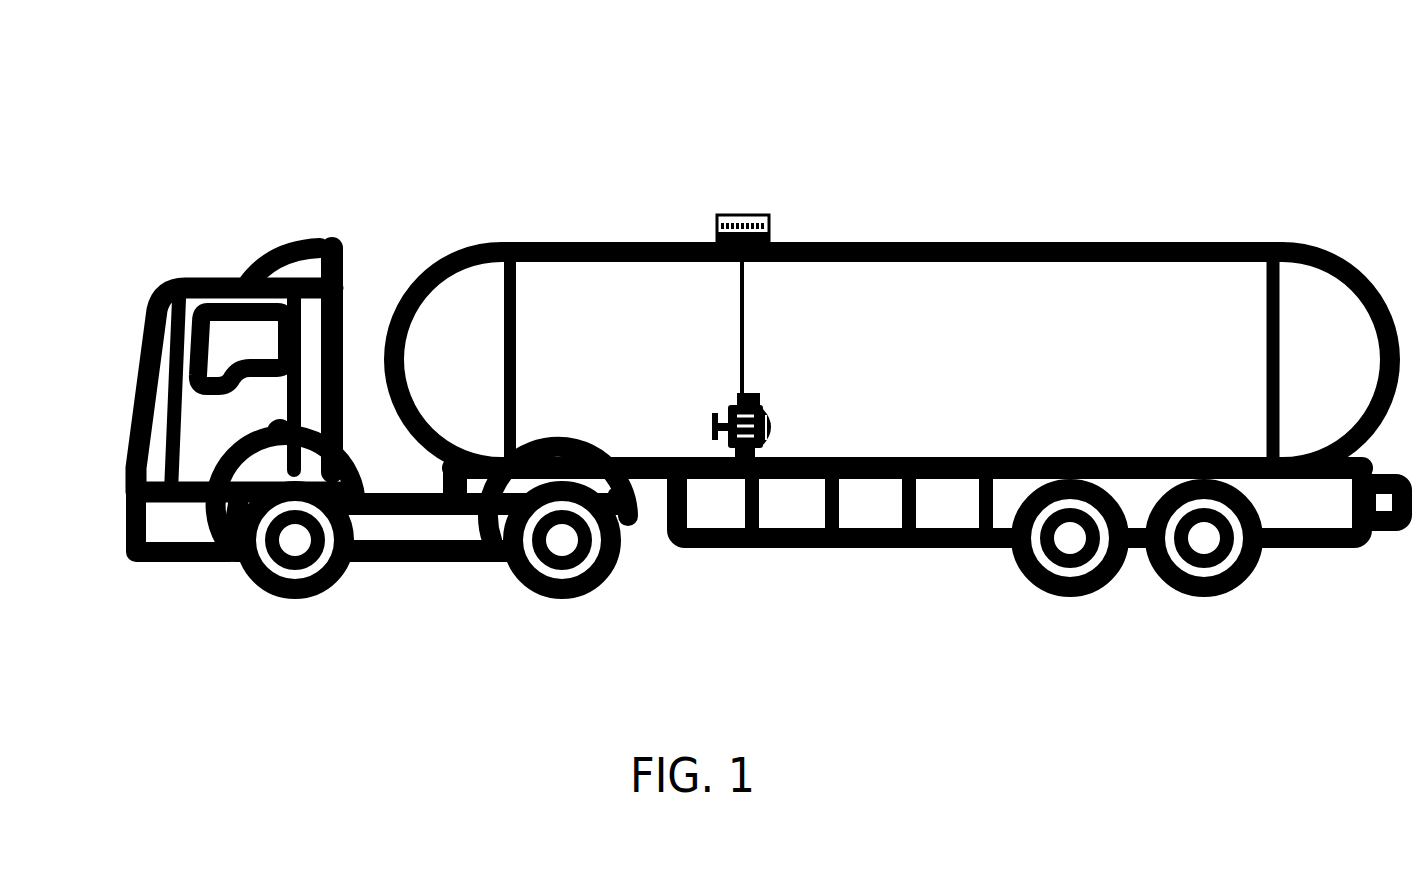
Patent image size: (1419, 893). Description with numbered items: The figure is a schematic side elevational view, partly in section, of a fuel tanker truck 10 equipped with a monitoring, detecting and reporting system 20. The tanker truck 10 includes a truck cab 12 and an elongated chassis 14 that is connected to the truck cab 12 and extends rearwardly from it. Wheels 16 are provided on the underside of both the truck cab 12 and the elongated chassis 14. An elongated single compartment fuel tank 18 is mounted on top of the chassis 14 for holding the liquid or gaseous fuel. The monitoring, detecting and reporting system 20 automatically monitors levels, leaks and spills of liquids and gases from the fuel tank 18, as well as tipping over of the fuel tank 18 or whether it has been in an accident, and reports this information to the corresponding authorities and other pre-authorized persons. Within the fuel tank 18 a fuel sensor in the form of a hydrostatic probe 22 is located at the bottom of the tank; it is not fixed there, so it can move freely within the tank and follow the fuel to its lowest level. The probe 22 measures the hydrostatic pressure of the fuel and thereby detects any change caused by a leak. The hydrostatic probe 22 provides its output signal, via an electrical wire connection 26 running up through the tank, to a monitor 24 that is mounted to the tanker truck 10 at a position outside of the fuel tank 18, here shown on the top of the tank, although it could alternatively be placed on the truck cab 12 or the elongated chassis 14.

The fuel tanker truck 10 is at (542, 145).
The truck cab 12 is at (212, 272).
The elongated chassis 14 is at (717, 553).
The wheels 16 is at (520, 582).
The single compartment fuel tank 18 is at (943, 240).
The monitoring, detecting and reporting system 20 is at (683, 193).
The hydrostatic probe 22 is at (788, 410).
The monitor 24 is at (735, 215).
The electrical wire connection 26 is at (740, 328).